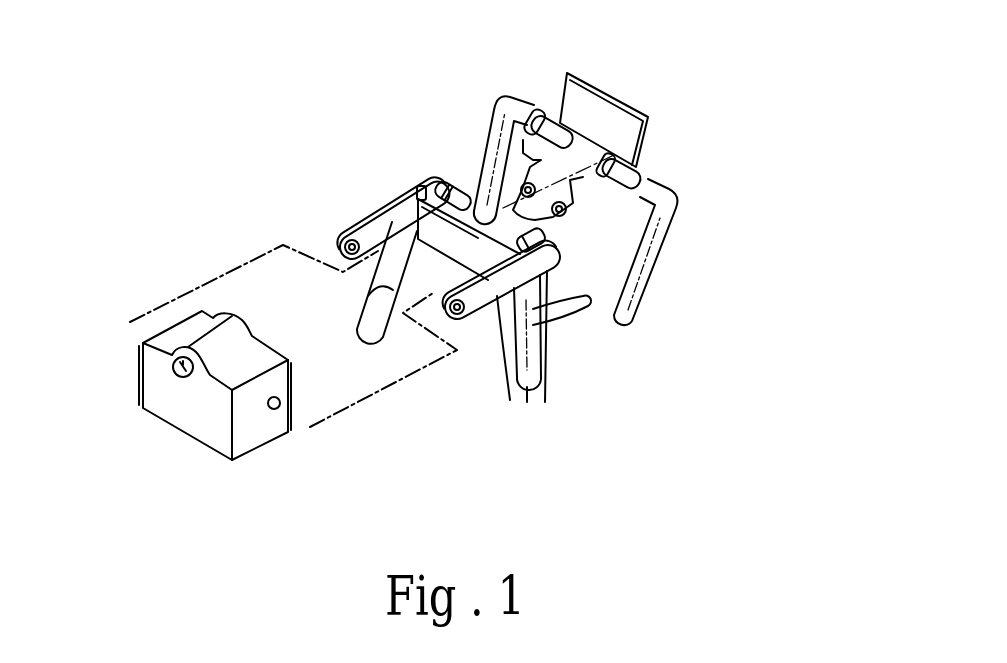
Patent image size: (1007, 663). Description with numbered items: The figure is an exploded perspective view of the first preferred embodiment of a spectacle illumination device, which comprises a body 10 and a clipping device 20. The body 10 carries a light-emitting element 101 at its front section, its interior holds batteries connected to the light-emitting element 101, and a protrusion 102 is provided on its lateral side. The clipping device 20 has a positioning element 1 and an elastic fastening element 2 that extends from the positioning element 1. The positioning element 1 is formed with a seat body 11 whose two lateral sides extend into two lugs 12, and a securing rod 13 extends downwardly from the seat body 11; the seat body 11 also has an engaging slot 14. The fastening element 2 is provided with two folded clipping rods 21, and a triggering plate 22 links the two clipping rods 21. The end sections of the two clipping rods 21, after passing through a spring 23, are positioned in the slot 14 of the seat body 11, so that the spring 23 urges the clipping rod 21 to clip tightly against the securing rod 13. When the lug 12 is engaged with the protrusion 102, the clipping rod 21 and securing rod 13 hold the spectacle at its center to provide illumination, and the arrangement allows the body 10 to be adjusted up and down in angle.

The positioning element 1 is at (450, 259).
The elastic fastening element 2 is at (614, 166).
The body 10 is at (184, 422).
The light-emitting element 101 is at (174, 378).
The protrusion 102 is at (275, 410).
The seat body 11 is at (428, 185).
The lug 12 is at (340, 222).
The securing rod 13 is at (372, 345).
The engaging slot 14 is at (455, 185).
The clipping device 20 is at (426, 158).
The clipping rod 21 is at (499, 98).
The triggering plate 22 is at (620, 102).
The spring 23 is at (528, 182).